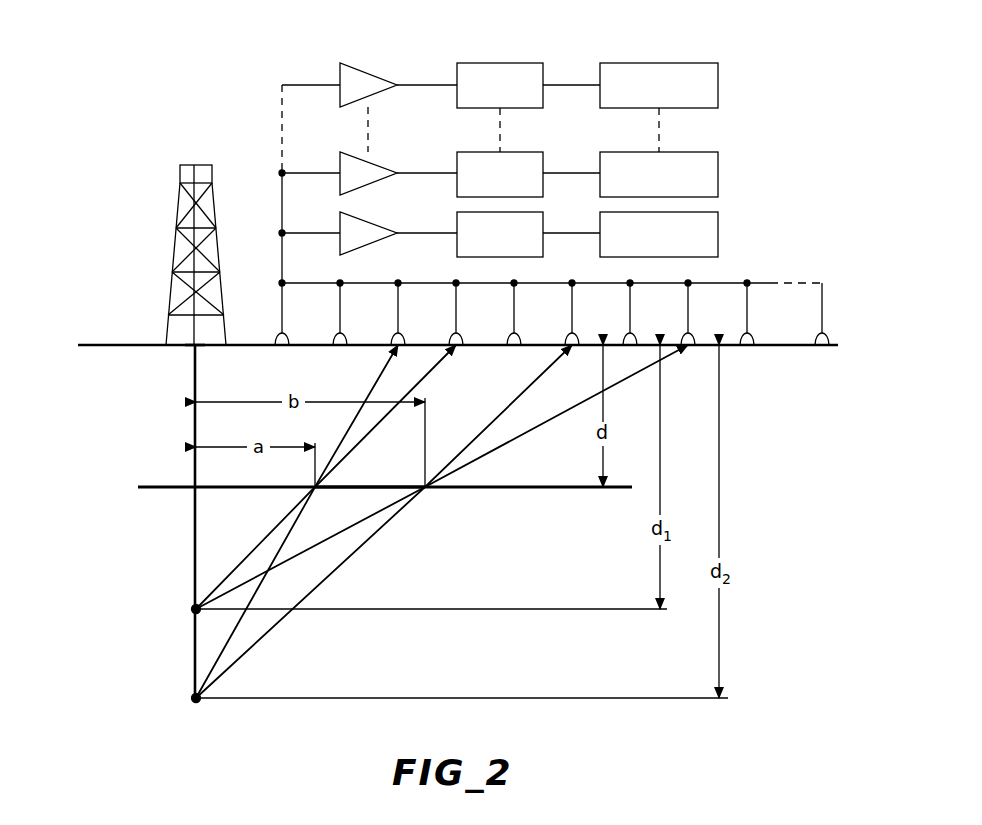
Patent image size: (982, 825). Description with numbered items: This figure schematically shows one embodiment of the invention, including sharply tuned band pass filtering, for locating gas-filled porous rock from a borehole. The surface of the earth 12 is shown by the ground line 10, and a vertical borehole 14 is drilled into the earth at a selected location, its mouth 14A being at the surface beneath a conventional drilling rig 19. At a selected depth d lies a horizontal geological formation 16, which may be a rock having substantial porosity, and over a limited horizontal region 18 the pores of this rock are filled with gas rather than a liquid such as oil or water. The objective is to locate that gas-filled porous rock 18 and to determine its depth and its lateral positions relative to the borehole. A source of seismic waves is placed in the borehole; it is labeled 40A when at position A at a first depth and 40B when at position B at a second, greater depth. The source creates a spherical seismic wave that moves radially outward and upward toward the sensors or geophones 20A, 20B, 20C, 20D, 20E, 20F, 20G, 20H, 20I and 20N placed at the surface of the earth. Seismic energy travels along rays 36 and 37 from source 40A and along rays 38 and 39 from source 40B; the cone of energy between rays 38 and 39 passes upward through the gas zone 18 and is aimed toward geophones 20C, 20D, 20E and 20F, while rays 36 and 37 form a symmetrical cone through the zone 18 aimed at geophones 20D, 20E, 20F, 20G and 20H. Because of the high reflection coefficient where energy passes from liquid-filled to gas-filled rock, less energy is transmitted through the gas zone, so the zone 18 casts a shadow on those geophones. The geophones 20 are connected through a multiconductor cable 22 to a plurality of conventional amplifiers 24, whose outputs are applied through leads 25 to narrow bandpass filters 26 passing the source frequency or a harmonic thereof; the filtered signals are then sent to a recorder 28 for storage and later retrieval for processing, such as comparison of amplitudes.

The surface of the earth 10 is at (133, 345).
The earth 12 is at (813, 452).
The vertical borehole 14 is at (194, 430).
The mouth of the borehole 14A is at (192, 349).
The horizontal geological formation 16 is at (503, 490).
The gas-filled porous rock 18 is at (377, 490).
The drilling rig 19 is at (173, 252).
The geophones 20 is at (567, 290).
The geophone 20A is at (310, 324).
The geophone 20B is at (368, 324).
The geophone 20C is at (426, 324).
The geophone 20D is at (484, 324).
The geophone 20E is at (542, 324).
The geophone 20F is at (600, 324).
The geophone 20G is at (658, 324).
The geophone 20H is at (716, 324).
The geophone 20I is at (770, 324).
The geophone 20N is at (850, 324).
The multiconductor cable 22 is at (282, 260).
The amplifiers 24 is at (340, 162).
The leads 25 is at (425, 172).
The narrow bandpass filters 26 is at (545, 158).
The recorder 28 is at (720, 160).
The ray 36 is at (433, 370).
The ray 37 is at (513, 440).
The ray 38 is at (381, 373).
The ray 39 is at (490, 431).
The source of seismic waves at position A 40A is at (194, 609).
The source of seismic waves at position B 40B is at (194, 698).